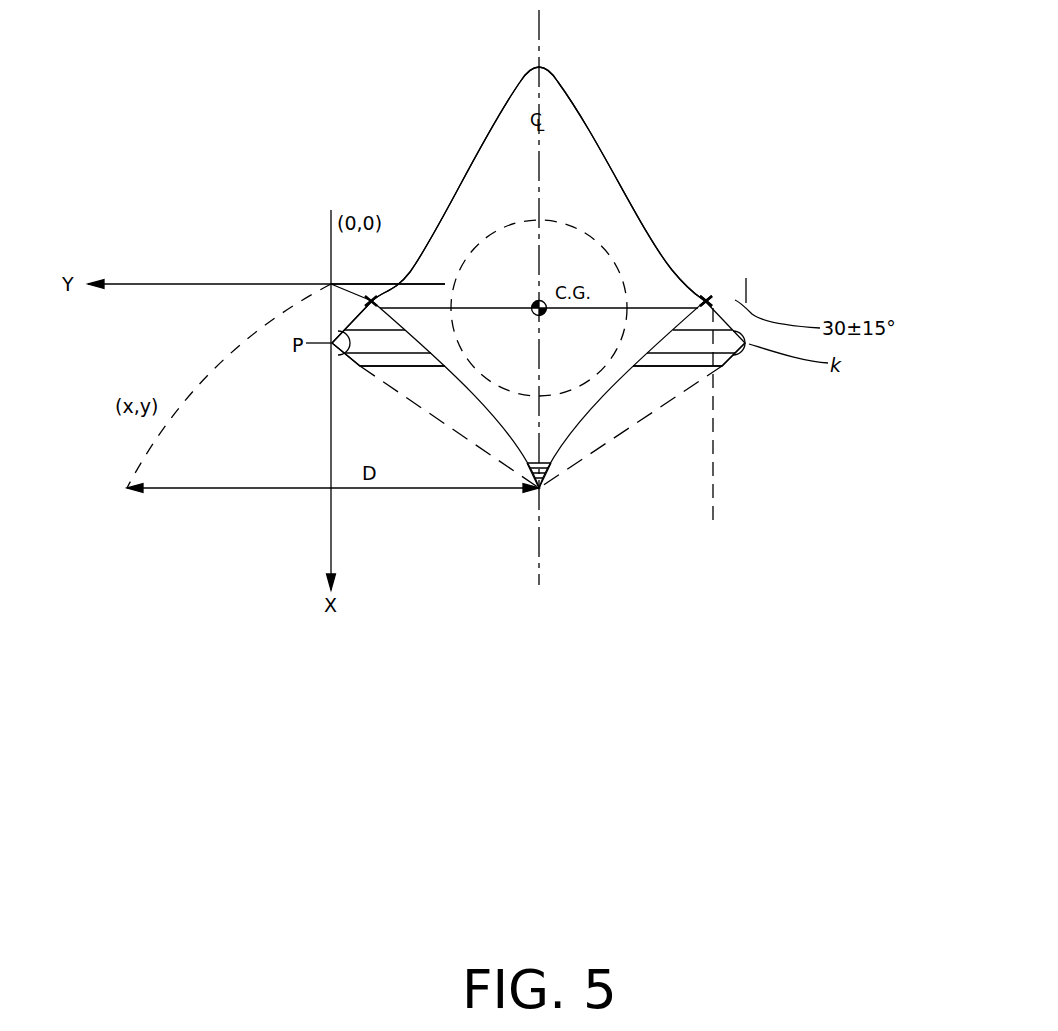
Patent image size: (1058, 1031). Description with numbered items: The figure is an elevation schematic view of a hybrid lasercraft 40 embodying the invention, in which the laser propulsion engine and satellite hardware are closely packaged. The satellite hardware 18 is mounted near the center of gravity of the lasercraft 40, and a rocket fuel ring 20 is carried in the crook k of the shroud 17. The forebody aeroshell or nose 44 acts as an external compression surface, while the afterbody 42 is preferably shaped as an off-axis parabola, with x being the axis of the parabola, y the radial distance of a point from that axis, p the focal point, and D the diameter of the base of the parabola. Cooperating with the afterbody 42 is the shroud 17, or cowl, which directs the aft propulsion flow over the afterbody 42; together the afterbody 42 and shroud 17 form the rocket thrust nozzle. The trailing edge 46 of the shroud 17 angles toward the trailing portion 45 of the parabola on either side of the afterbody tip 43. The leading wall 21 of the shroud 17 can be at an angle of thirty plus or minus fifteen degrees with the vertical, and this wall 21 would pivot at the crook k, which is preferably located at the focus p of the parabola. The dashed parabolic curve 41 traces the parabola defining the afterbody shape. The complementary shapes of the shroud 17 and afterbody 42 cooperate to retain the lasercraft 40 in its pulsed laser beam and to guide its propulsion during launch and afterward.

The lasercraft 40 is at (416, 101).
The forebody aeroshell or nose 44 is at (606, 154).
The afterbody 42 is at (618, 373).
The satellite hardware 18 is at (595, 243).
The shroud 17 is at (717, 299).
The rocket fuel ring 20 is at (371, 344).
The leading wall 21 is at (708, 300).
The trailing edge 46 is at (723, 364).
The trailing portion 45 is at (568, 441).
The afterbody tip 43 is at (541, 489).
The parabolic curve 41 is at (205, 346).